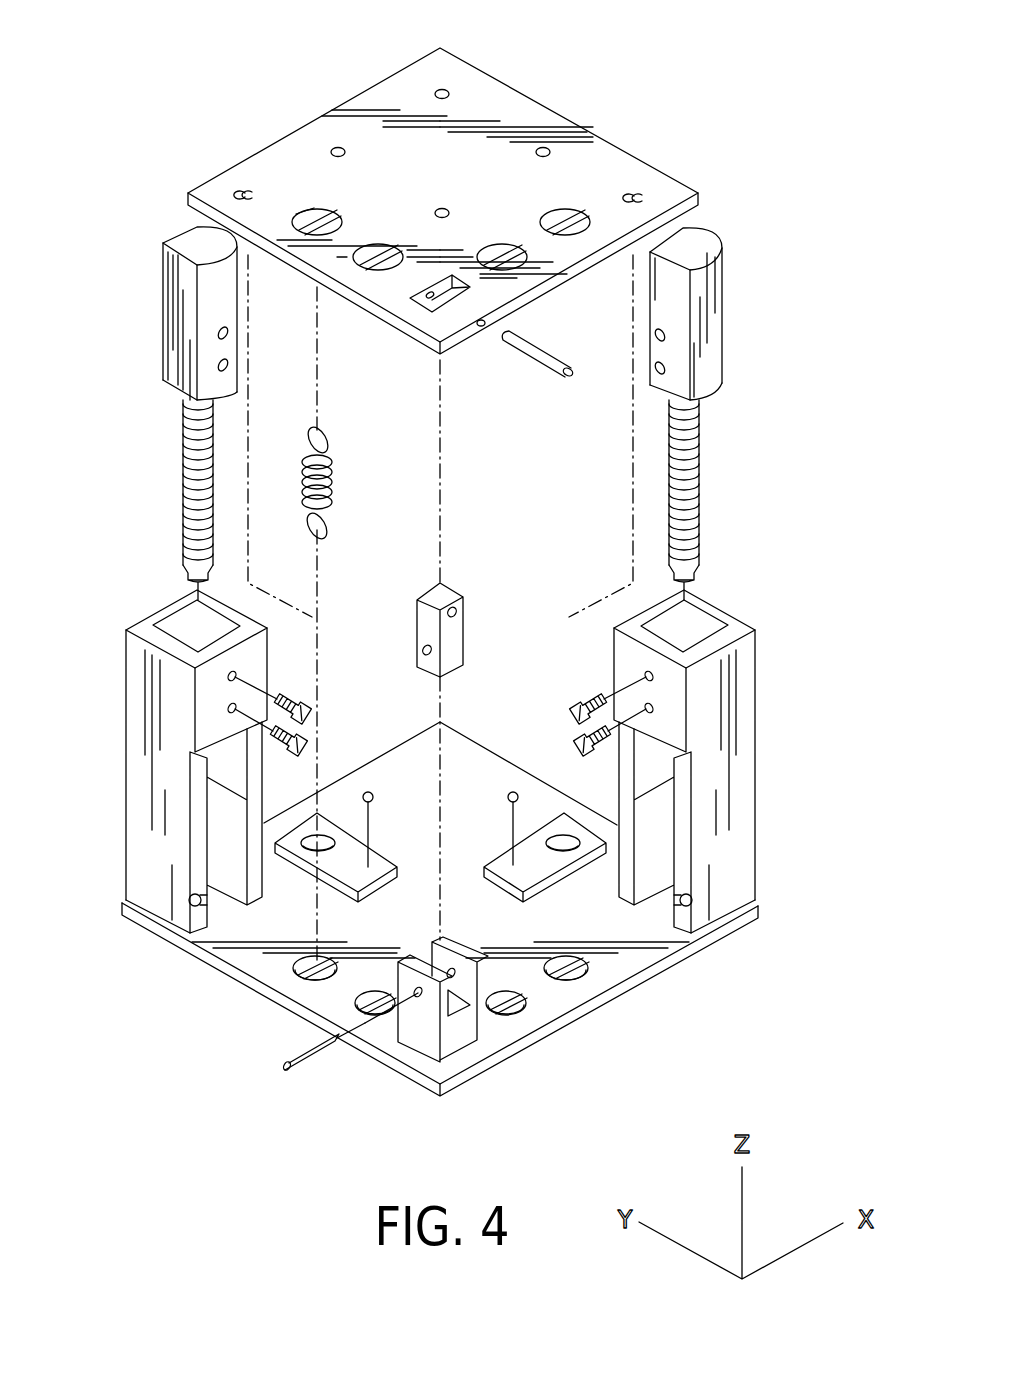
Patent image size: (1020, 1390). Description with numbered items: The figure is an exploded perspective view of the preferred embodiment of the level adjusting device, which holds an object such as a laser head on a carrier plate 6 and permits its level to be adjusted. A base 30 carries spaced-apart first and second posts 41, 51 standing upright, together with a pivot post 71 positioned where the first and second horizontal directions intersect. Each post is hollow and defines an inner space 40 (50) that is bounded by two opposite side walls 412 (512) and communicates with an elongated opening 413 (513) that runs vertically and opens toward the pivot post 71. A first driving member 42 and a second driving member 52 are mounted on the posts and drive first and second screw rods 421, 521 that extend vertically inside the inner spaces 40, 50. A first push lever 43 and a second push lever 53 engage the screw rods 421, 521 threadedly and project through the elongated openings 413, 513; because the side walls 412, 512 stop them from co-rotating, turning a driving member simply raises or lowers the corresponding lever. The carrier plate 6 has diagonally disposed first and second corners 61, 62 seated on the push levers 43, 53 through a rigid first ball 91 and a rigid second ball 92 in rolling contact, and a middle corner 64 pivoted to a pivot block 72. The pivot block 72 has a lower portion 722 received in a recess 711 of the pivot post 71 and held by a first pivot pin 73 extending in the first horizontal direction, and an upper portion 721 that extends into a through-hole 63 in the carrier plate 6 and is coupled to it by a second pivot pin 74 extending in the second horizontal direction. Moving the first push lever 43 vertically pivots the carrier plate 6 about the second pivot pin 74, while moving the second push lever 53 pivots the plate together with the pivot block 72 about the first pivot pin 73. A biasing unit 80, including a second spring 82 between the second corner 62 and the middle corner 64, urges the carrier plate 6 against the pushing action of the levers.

The carrier plate 6 is at (435, 200).
The first corner 61 is at (648, 175).
The second corner 62 is at (222, 190).
The through-hole 63 is at (437, 306).
The middle corner 64 is at (460, 336).
The second pivot pin 74 is at (538, 385).
The second driving member 52 is at (163, 313).
The second screw rod 521 is at (190, 468).
The first driving member 42 is at (724, 302).
The first screw rod 421 is at (700, 437).
The biasing unit 80 is at (363, 483).
The second spring 82 is at (333, 493).
The pivot block 72 is at (444, 602).
The upper portion 721 is at (425, 610).
The lower portion 722 is at (420, 657).
The inner space 50 is at (150, 758).
The second post 51 is at (126, 780).
The elongated opening 513 is at (222, 856).
The side walls 512 is at (148, 883).
The inner space 40 is at (731, 736).
The first post 41 is at (755, 730).
The elongated opening 413 is at (645, 838).
The side walls 412 is at (730, 800).
The second ball 92 is at (362, 790).
The first ball 91 is at (518, 790).
The base 30 is at (565, 1030).
The second push lever 53 is at (312, 862).
The first push lever 43 is at (567, 878).
The pivot post 71 is at (482, 1043).
The recess 711 is at (432, 1003).
The first pivot pin 73 is at (298, 1050).